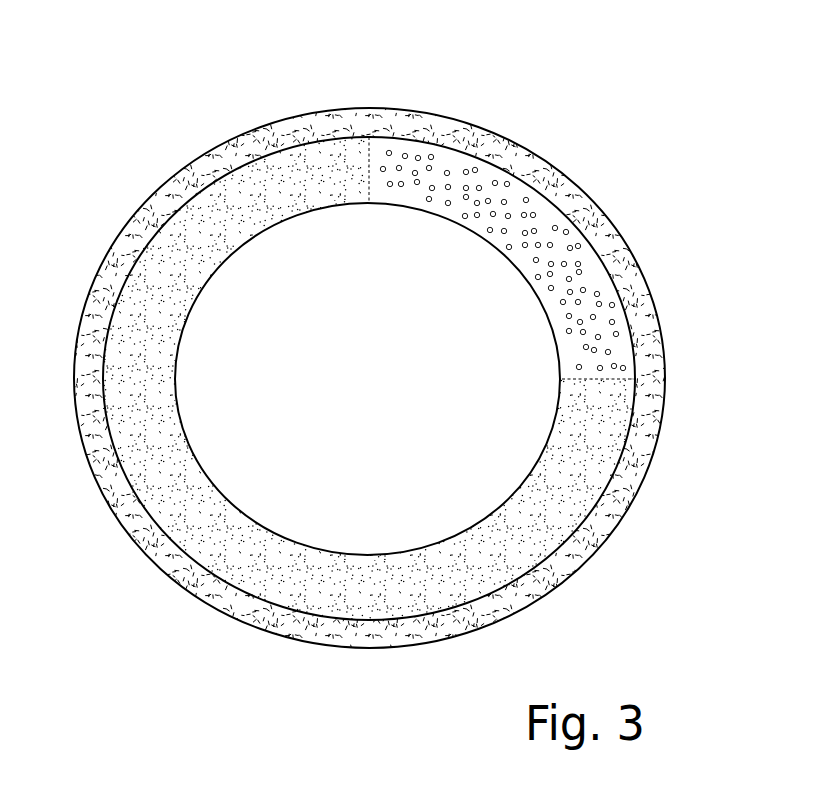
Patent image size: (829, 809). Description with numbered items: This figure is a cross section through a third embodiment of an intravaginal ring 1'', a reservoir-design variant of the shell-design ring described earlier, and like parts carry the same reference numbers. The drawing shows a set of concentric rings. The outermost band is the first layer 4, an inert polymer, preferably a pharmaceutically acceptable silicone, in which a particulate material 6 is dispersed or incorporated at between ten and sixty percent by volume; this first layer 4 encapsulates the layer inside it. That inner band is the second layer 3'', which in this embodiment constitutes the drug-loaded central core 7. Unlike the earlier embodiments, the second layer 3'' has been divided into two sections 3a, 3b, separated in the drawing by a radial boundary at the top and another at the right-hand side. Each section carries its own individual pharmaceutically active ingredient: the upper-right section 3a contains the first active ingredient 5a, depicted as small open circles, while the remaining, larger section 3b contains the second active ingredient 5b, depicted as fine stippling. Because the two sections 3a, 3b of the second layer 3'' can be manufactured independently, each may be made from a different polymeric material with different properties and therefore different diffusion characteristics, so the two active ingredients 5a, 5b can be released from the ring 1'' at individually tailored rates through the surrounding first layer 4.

The third embodiment of intravaginal ring 1'' is at (411, 368).
The second layer 3'' is at (367, 457).
The first section of second layer 3a is at (570, 240).
The second section of second layer 3b is at (567, 575).
The first layer 4 is at (632, 502).
The first active ingredient 5a is at (497, 182).
The second active ingredient 5b is at (288, 598).
The particulate material 6 is at (664, 380).
The central core 7 is at (377, 238).